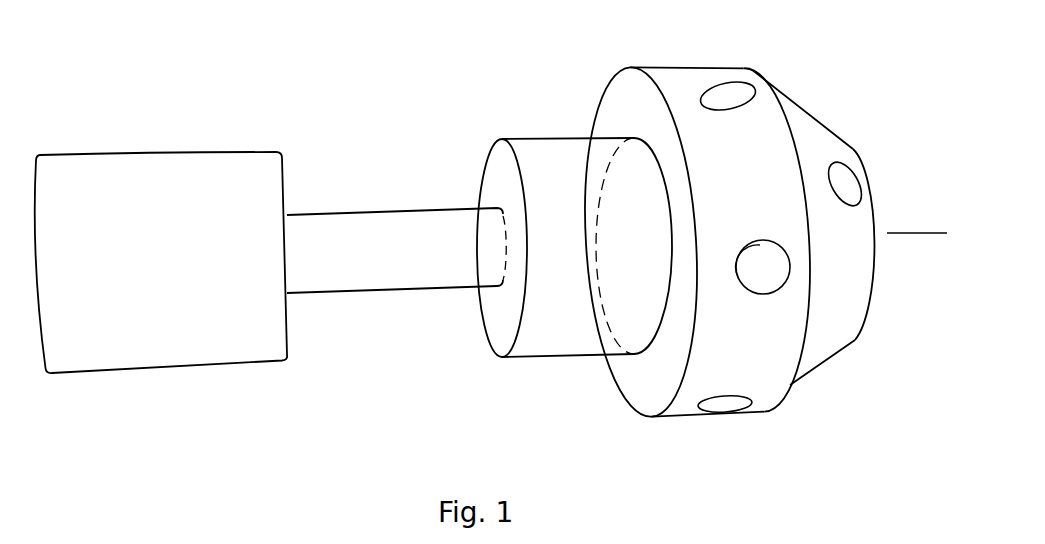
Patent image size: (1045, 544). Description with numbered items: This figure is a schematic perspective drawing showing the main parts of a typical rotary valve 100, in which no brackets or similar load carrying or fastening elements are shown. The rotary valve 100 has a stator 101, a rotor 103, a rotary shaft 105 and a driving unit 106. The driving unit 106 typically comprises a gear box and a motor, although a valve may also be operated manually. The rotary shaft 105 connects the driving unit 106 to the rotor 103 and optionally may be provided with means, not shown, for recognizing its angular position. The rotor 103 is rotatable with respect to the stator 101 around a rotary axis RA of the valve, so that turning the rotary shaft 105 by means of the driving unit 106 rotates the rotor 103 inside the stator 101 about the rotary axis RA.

The rotary valve 100 is at (240, 67).
The stator 101 is at (802, 119).
The rotor 103 is at (567, 358).
The rotary shaft 105 is at (418, 289).
The driving unit 106 is at (202, 362).
The rotary axis RA is at (928, 235).